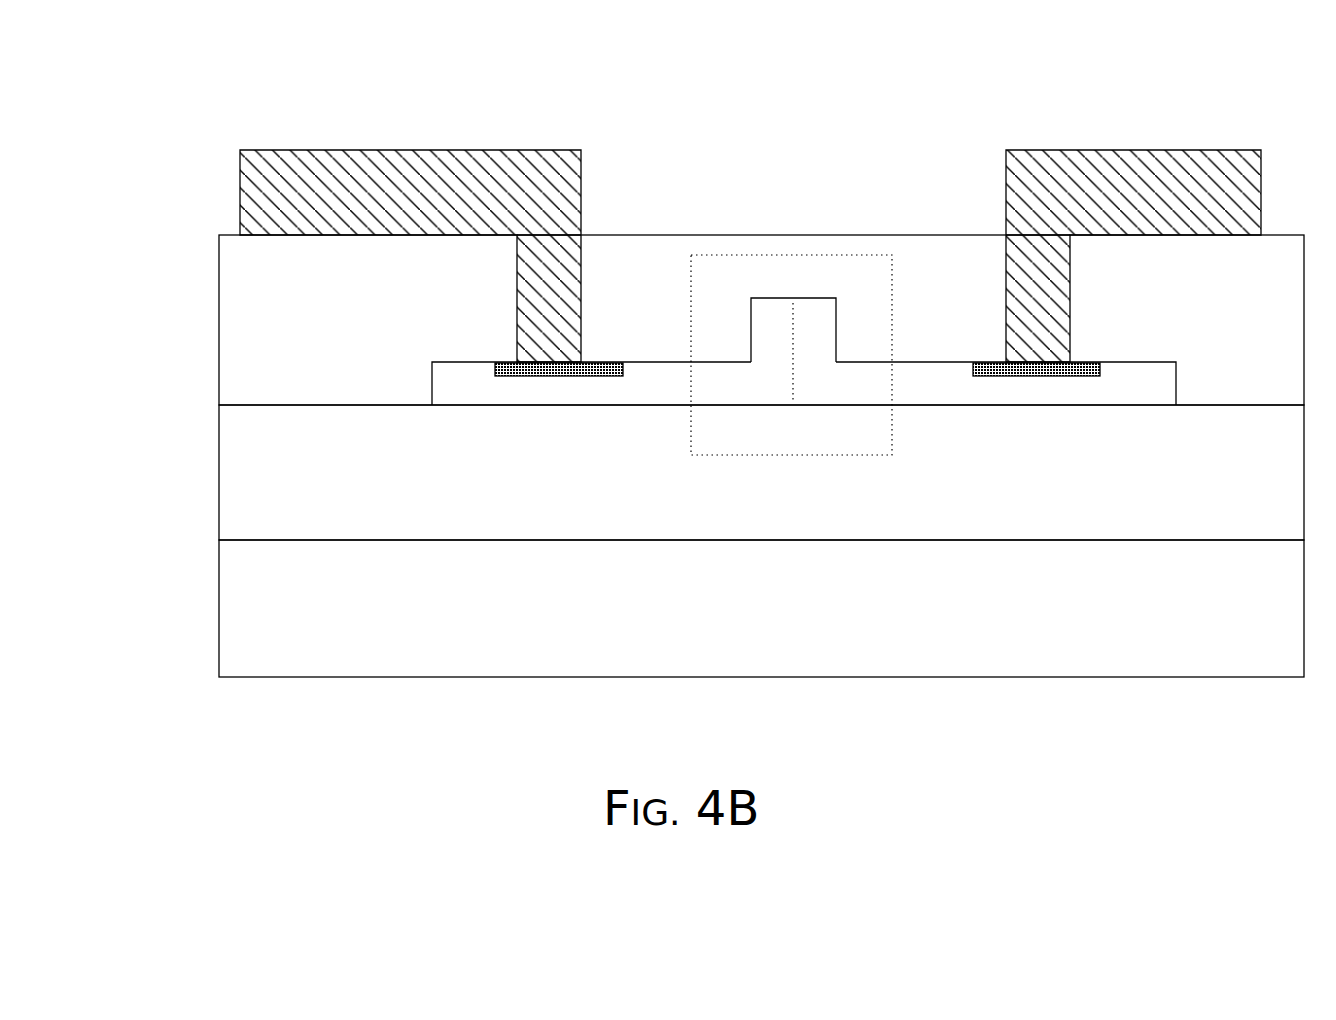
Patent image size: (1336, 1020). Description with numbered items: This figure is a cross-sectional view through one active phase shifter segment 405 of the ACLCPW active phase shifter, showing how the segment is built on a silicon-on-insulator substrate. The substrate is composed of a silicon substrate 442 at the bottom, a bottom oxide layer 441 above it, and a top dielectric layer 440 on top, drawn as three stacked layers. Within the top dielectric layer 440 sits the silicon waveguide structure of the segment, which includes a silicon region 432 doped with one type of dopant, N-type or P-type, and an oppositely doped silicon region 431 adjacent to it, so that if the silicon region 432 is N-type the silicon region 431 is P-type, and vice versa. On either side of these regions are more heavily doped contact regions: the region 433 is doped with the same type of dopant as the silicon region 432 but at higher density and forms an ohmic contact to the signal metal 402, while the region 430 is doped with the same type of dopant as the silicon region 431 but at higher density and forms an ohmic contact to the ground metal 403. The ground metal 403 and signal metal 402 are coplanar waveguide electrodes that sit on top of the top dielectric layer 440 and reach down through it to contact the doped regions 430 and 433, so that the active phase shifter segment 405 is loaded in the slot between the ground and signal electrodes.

The signal metal 402 is at (1153, 164).
The ground metal 403 is at (366, 164).
The active phase shifter segment 405 is at (728, 273).
The highly doped silicon region 430 is at (516, 378).
The oppositely doped silicon region 431 is at (772, 389).
The doped silicon region 432 is at (821, 387).
The highly doped silicon region 433 is at (1041, 379).
The top dielectric layer 440 is at (299, 310).
The bottom oxide layer 441 is at (299, 458).
The silicon substrate 442 is at (299, 606).